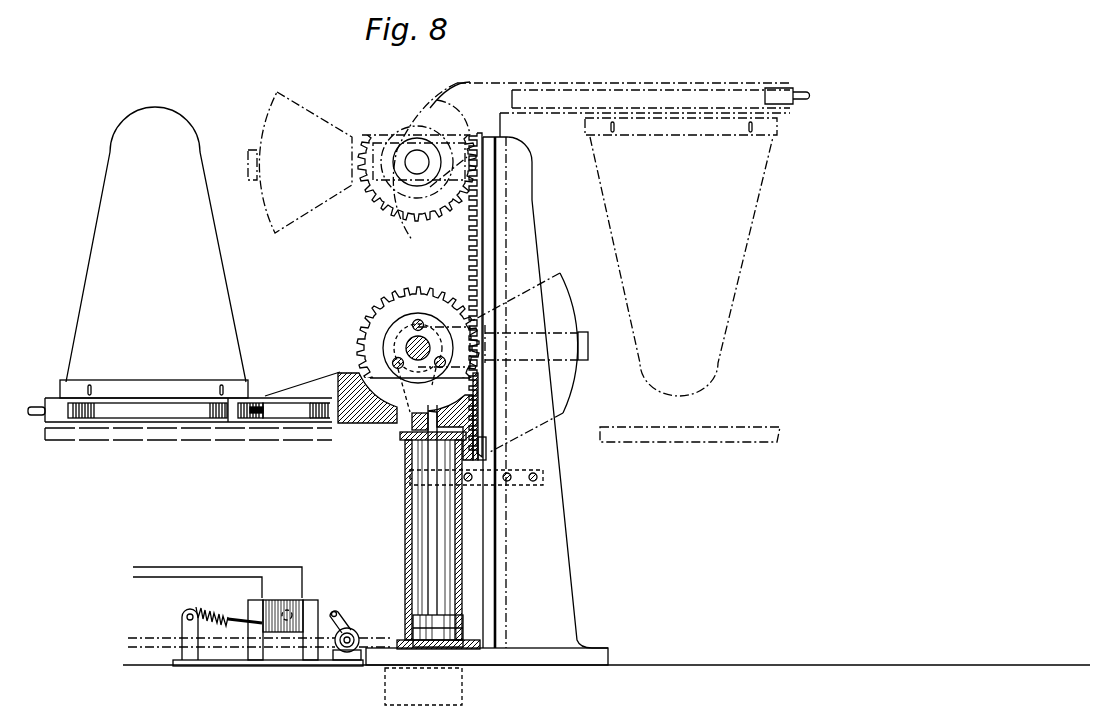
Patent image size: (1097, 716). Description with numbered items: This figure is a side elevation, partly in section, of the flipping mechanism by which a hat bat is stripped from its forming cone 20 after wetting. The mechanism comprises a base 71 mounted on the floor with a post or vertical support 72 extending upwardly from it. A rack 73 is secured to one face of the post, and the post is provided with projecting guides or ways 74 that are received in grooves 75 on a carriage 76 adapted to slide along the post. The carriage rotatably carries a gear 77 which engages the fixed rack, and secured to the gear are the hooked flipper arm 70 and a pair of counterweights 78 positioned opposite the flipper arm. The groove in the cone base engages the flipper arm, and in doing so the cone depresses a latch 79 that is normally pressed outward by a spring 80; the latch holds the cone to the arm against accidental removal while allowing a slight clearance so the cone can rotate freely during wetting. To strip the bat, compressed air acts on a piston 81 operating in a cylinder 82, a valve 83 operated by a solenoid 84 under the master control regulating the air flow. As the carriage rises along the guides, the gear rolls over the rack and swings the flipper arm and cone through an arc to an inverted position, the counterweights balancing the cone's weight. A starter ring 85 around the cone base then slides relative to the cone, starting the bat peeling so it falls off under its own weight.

The forming cone 20 is at (222, 253).
The hooked flipper arm 70 is at (40, 405).
The base 71 is at (545, 656).
The post or vertical support 72 is at (558, 567).
The rack 73 is at (476, 256).
The guides or ways 74 is at (490, 438).
The grooves 75 is at (478, 451).
The carriage 76 is at (432, 372).
The gear 77 is at (386, 213).
The counterweights 78 is at (317, 118).
The latch 79 is at (278, 410).
The spring 80 is at (298, 410).
The piston 81 is at (420, 618).
The cylinder 82 is at (410, 542).
The valve 83 is at (350, 627).
The solenoid 84 is at (272, 620).
The starter ring 85 is at (246, 386).